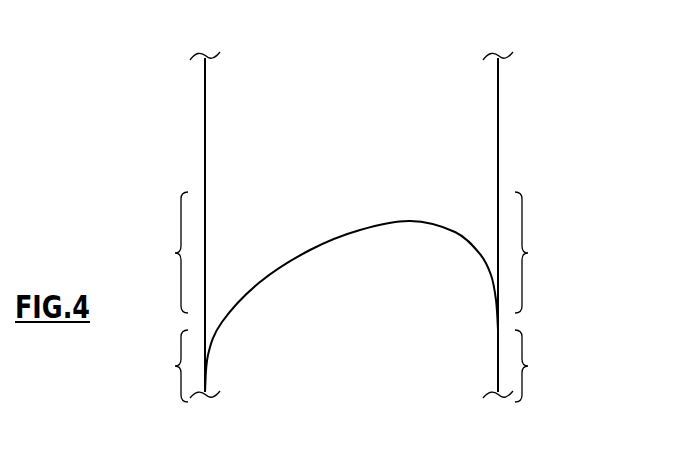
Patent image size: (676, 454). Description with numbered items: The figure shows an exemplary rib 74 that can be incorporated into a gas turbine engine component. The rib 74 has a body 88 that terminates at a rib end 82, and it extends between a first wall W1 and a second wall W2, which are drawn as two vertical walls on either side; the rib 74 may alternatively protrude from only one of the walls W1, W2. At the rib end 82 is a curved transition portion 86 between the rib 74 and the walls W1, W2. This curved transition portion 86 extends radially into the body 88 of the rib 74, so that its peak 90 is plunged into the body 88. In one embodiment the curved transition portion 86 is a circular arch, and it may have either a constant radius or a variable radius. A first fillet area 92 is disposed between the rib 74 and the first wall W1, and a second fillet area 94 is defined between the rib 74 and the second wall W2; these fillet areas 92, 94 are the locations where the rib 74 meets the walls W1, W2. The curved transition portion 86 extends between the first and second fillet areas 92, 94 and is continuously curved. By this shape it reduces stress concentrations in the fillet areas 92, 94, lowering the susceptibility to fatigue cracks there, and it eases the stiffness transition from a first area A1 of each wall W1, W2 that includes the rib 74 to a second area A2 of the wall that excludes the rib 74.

The rib 74 is at (360, 60).
The rib end 82 is at (349, 288).
The curved transition portion 86 is at (310, 251).
The body 88 is at (365, 120).
The peak 90 is at (363, 218).
The first fillet area 92 is at (214, 322).
The second fillet area 94 is at (489, 273).
The first wall W1 is at (165, 171).
The second wall W2 is at (575, 171).
The first area A1 is at (351, 252).
The second area A2 is at (352, 366).